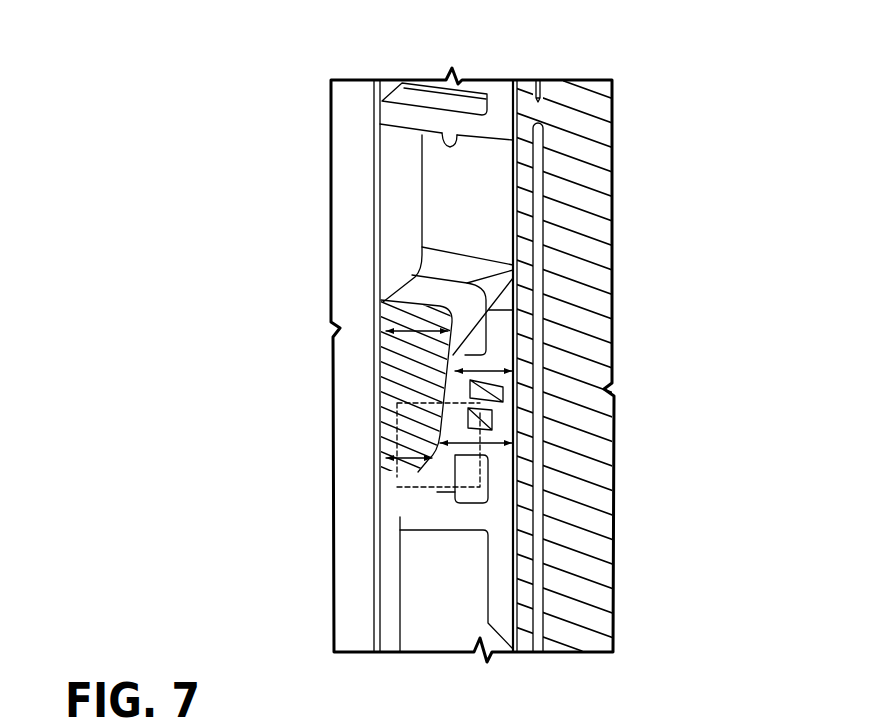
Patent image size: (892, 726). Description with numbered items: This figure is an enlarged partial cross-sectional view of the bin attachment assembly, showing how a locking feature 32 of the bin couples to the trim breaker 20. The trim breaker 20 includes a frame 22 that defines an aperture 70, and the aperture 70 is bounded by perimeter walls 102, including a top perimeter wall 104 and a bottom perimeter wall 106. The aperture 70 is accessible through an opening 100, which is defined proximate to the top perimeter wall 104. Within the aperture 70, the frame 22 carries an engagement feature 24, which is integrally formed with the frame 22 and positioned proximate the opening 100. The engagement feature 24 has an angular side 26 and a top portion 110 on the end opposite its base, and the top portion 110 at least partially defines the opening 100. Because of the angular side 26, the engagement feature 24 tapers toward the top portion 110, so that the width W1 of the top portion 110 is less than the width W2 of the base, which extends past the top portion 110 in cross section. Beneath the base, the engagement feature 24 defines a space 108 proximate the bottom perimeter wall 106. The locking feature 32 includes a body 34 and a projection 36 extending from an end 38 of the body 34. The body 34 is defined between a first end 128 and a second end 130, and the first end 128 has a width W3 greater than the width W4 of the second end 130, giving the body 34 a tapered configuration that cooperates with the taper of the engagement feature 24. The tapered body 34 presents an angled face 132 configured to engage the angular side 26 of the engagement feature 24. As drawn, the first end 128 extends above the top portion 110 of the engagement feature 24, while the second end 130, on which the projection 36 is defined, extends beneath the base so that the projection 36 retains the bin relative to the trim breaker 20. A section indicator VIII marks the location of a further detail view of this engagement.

The trim breaker 20 is at (377, 190).
The frame 22 is at (450, 96).
The engagement feature 24 is at (498, 388).
The angular side 26 is at (440, 387).
The locking feature 32 is at (410, 300).
The body 34 is at (425, 357).
The projection 36 is at (500, 505).
The end 38 is at (418, 478).
The aperture 70 is at (403, 185).
The opening 100 is at (495, 178).
The perimeter walls 102 is at (392, 113).
The top perimeter wall 104 is at (460, 137).
The bottom perimeter wall 106 is at (445, 510).
The space 108 is at (500, 482).
The top portion 110 is at (489, 309).
The first end 128 is at (437, 292).
The second end 130 is at (447, 495).
The angled face 132 is at (447, 372).
The width of top portion W1 is at (512, 393).
The width of base portion W2 is at (488, 447).
The width of first end W3 is at (388, 327).
The width of second end W4 is at (386, 458).
The section line VIII is at (400, 484).